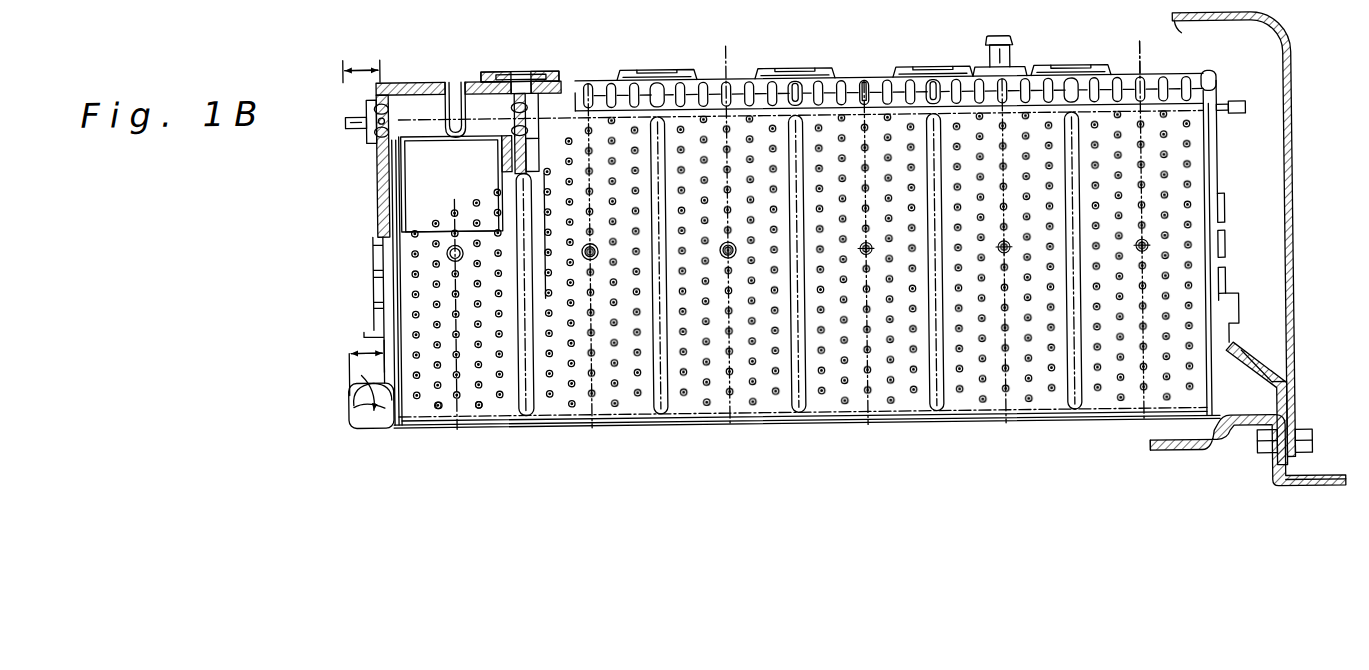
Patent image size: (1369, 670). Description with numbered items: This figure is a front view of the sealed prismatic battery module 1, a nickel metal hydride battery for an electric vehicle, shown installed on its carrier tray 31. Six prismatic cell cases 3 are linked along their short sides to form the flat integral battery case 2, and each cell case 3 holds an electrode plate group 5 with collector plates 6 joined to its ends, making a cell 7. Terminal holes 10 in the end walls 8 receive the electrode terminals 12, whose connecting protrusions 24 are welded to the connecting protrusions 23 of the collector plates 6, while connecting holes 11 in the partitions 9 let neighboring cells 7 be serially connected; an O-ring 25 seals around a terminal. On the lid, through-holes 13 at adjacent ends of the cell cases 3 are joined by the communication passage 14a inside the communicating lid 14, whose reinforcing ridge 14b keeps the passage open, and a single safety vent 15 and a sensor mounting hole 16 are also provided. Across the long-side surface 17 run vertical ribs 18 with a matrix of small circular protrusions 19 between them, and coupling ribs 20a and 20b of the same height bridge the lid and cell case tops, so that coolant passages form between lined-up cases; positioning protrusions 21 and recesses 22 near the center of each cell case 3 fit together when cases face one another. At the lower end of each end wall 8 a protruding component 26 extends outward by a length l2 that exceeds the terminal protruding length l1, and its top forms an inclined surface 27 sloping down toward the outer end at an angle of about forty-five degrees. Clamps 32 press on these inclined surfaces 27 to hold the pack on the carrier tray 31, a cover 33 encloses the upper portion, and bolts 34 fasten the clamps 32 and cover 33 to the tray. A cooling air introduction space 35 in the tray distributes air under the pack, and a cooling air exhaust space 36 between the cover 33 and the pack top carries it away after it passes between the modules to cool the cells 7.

The sealed prismatic battery module 1 is at (428, 72).
The integral battery case 2 is at (376, 292).
The prismatic cell case 3 is at (420, 106).
The electrode plate group 5 is at (437, 201).
The collector plate 6 is at (382, 232).
The cell 7 is at (428, 430).
The end wall 8 is at (1216, 173).
The partition 9 is at (392, 237).
The terminal hole 10 is at (380, 128).
The connecting hole 11 is at (528, 128).
The electrode terminal 12 is at (352, 126).
The through-hole 13 is at (500, 83).
The communicating lid 14 is at (500, 72).
The communication passage 14a is at (540, 73).
The reinforcing ridge 14b is at (521, 73).
The safety vent 15 is at (1016, 72).
The sensor mounting hole 16 is at (457, 83).
The long-side surface 17 is at (645, 408).
The rib 18 is at (520, 410).
The circular protrusion 19 is at (437, 409).
The coupling rib 20a is at (800, 97).
The coupling rib 20b is at (869, 100).
The positioning protrusion 21 is at (866, 262).
The positioning recess 22 is at (450, 262).
The connecting protrusion 23 is at (388, 130).
The connecting protrusion 24 is at (372, 110).
The O-ring 25 is at (516, 143).
The protruding component 26 is at (358, 403).
The inclined surface 27 is at (362, 378).
The carrier tray 31 is at (1276, 492).
The clamp 32 is at (1270, 360).
The cover 33 is at (1295, 268).
The bolt 34 is at (1310, 452).
The cooling air introduction space 35 is at (1170, 444).
The cooling air exhaust space 36 is at (1186, 75).
The protruding length of electrode terminal l1 is at (372, 72).
The protruding length of protruding component l2 is at (362, 355).